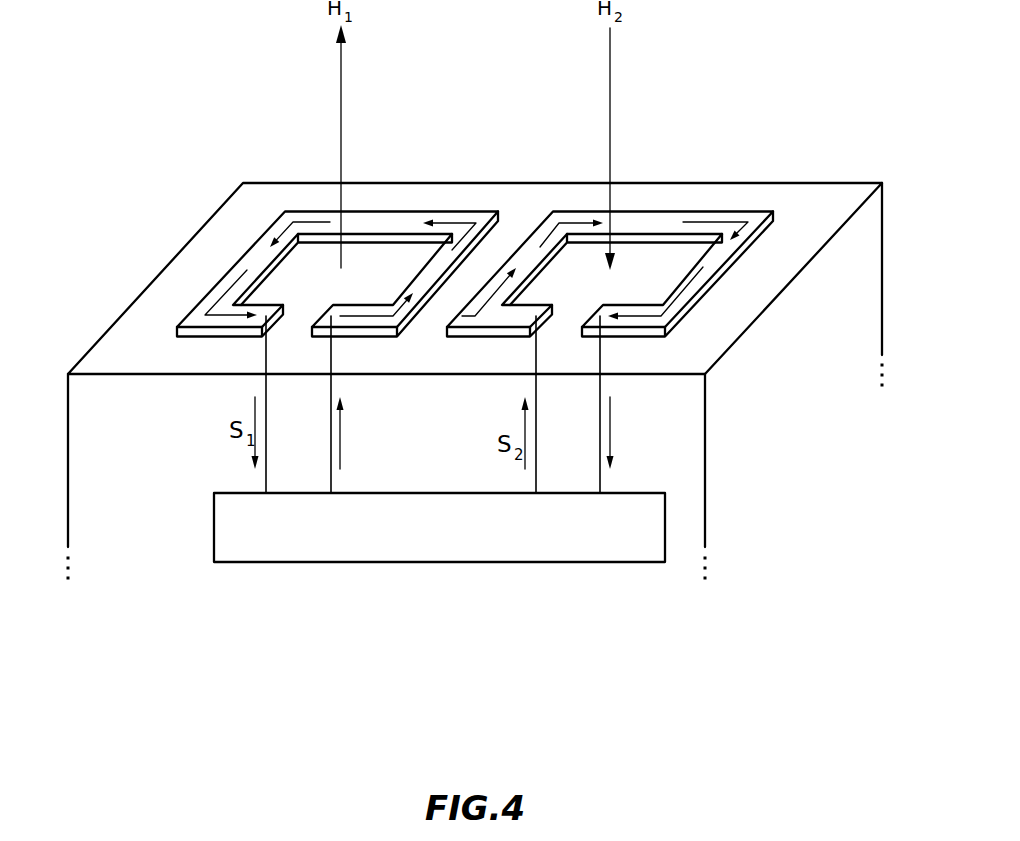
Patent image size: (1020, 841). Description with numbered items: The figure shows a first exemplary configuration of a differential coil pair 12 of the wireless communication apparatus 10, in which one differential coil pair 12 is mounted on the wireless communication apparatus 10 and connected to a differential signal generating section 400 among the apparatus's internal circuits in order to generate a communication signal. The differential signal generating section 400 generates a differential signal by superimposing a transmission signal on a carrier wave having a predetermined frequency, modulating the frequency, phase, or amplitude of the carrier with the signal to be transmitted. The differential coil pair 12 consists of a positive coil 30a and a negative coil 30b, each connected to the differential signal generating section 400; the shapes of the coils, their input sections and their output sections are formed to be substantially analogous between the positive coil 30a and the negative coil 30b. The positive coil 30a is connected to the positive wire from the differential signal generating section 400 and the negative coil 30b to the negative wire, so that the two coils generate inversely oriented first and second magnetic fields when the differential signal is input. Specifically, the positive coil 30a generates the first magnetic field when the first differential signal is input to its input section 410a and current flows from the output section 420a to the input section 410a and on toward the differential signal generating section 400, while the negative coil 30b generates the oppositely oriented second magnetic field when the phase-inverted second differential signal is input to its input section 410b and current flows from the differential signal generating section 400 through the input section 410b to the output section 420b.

The wireless communication apparatus 10 is at (490, 700).
The differential coil pair 12 is at (697, 125).
The positive coil 30a is at (385, 221).
The negative coil 30b is at (648, 221).
The input section of positive coil 410a is at (262, 317).
The output section of positive coil 420a is at (343, 308).
The input section of negative coil 410b is at (527, 321).
The output section of negative coil 420b is at (610, 308).
The differential signal generating section 400 is at (440, 562).